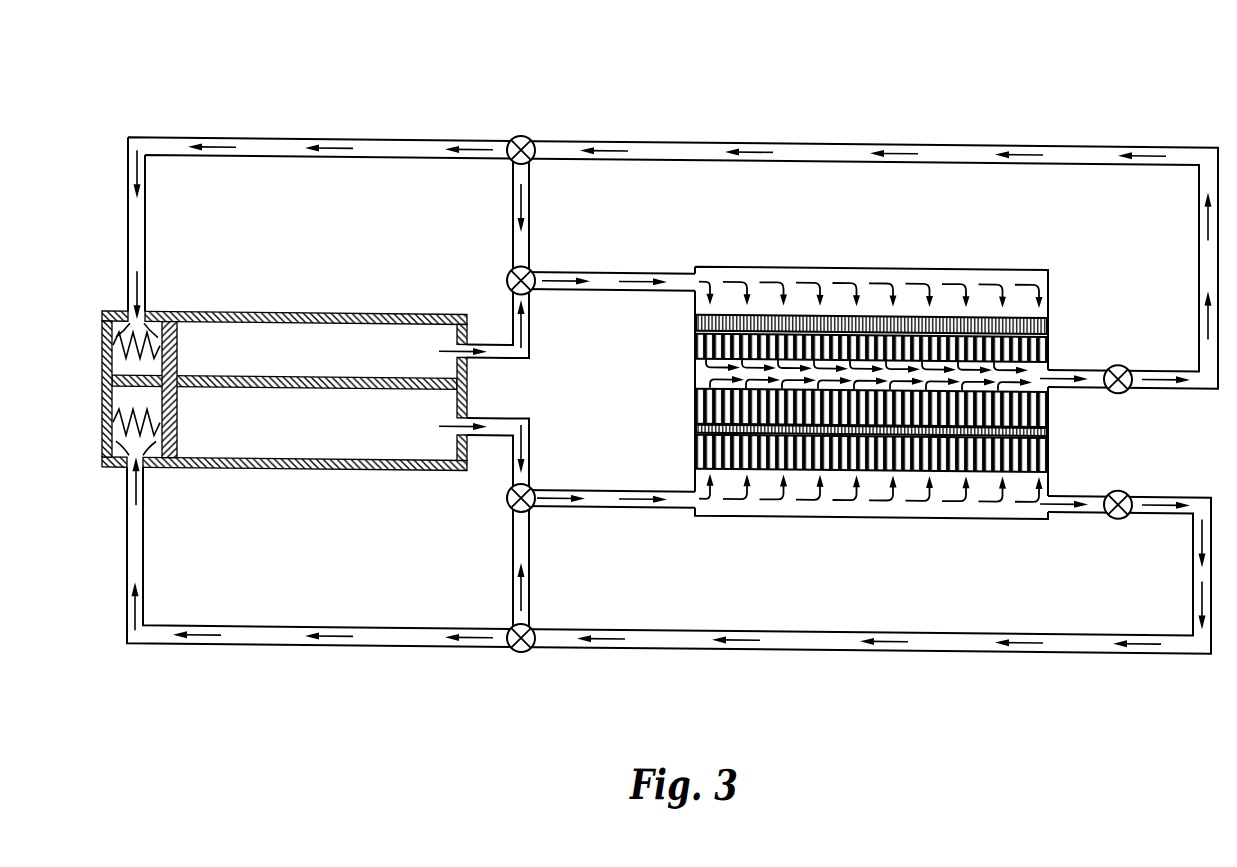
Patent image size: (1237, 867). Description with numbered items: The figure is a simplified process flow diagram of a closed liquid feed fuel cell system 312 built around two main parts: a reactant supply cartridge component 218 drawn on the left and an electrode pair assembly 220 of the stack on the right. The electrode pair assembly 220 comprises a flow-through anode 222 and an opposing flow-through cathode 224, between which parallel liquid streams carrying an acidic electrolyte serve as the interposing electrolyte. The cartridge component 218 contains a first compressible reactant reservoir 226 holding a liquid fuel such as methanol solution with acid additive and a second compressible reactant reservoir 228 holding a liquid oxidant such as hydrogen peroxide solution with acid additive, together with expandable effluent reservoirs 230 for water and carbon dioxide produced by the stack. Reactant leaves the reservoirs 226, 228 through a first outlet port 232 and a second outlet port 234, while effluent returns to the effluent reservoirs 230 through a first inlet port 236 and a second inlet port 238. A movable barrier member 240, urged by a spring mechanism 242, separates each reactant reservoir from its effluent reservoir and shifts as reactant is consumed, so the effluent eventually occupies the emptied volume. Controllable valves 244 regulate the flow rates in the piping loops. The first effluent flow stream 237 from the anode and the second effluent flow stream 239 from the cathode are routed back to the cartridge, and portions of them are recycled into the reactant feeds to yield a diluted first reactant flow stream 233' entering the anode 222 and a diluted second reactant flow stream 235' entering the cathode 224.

The closed liquid feed fuel cell system 312 is at (776, 66).
The reactant supply cartridge component 218 is at (251, 360).
The electrode pair assembly 220 is at (856, 393).
The flow-through anode 222 is at (1050, 334).
The flow-through cathode 224 is at (1050, 403).
The first compressible reactant reservoir 226 is at (350, 327).
The second compressible reactant reservoir 228 is at (320, 457).
The expandable effluent reservoir 230 is at (103, 309).
The first outlet port 232 is at (472, 354).
The second outlet port 234 is at (468, 414).
The first inlet port 236 is at (147, 309).
The second inlet port 238 is at (147, 468).
The movable barrier member 240 is at (180, 354).
The spring mechanism 242 is at (112, 349).
The valve 244 is at (533, 131).
The first effluent flow stream 237 is at (250, 147).
The second effluent flow stream 239 is at (520, 543).
The diluted first reactant flow stream 233' is at (608, 259).
The diluted second reactant flow stream 235' is at (608, 522).